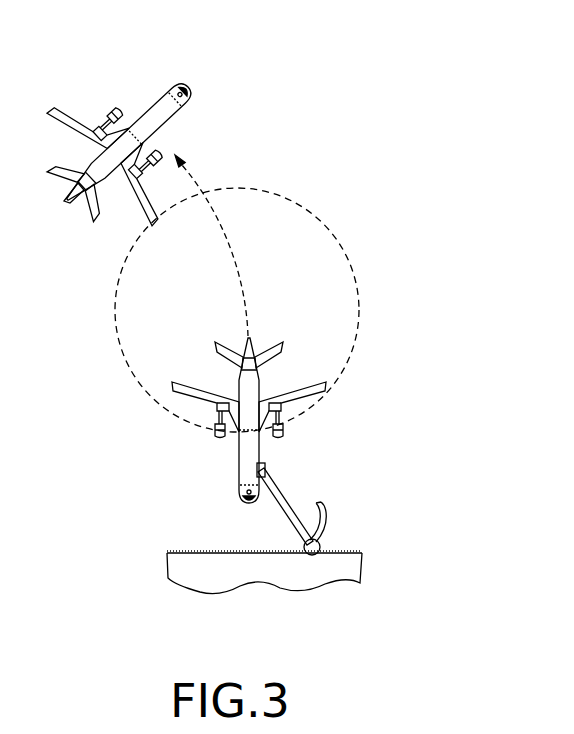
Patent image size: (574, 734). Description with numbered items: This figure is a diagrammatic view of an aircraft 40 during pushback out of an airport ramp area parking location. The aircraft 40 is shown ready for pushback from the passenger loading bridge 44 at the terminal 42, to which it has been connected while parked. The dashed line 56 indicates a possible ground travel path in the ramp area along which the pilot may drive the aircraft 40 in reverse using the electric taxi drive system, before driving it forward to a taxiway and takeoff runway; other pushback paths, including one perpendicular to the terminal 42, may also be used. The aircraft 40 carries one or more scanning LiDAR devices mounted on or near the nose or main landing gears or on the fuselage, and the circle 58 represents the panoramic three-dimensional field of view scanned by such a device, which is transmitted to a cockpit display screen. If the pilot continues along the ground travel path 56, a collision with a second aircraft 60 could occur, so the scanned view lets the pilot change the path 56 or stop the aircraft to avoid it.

The aircraft 40 is at (218, 480).
The airport terminal 42 is at (267, 568).
The passenger loading bridge 44 is at (293, 517).
The dashed line (ground travel path) 56 is at (200, 187).
The circle (LiDAR field of view) 58 is at (357, 283).
The aircraft 60 is at (144, 90).